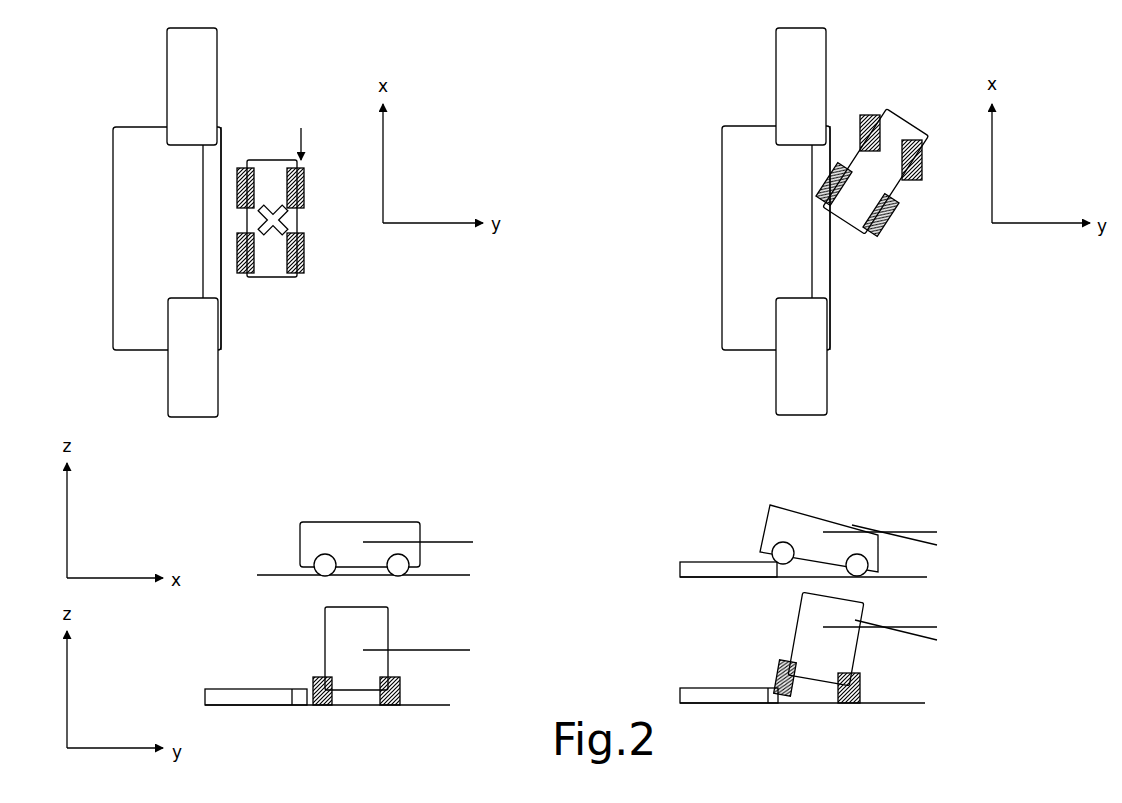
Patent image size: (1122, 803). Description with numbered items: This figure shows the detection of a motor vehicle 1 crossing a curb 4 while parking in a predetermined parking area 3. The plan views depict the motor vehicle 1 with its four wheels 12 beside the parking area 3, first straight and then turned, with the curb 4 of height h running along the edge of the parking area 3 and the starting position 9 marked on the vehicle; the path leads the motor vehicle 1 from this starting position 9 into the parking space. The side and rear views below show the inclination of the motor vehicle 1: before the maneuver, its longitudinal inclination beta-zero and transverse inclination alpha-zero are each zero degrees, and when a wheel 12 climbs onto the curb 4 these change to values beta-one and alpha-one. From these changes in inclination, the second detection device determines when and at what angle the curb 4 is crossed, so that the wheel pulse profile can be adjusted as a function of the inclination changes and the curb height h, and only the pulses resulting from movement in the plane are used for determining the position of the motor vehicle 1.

The motor vehicle 1 is at (276, 283).
The predetermined parking area 3 is at (471, 222).
The curb 4 is at (229, 301).
The starting position 9 is at (287, 222).
The wheel 12 is at (305, 130).